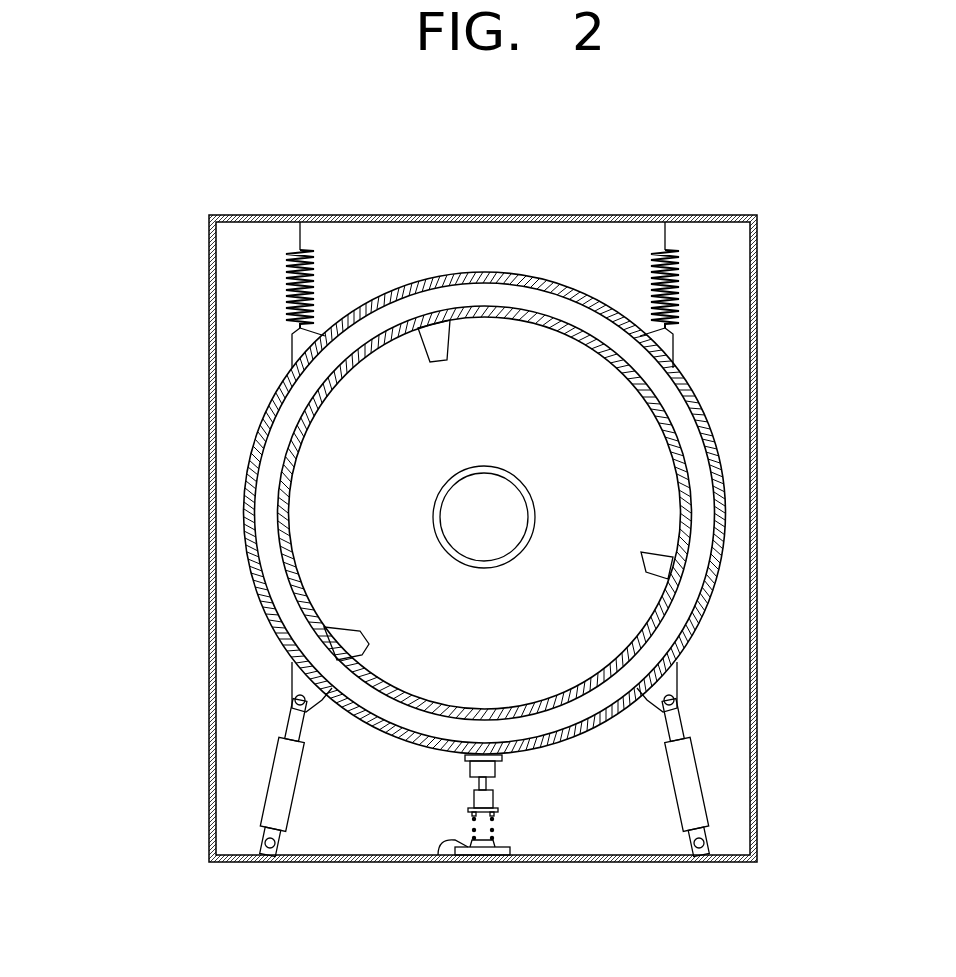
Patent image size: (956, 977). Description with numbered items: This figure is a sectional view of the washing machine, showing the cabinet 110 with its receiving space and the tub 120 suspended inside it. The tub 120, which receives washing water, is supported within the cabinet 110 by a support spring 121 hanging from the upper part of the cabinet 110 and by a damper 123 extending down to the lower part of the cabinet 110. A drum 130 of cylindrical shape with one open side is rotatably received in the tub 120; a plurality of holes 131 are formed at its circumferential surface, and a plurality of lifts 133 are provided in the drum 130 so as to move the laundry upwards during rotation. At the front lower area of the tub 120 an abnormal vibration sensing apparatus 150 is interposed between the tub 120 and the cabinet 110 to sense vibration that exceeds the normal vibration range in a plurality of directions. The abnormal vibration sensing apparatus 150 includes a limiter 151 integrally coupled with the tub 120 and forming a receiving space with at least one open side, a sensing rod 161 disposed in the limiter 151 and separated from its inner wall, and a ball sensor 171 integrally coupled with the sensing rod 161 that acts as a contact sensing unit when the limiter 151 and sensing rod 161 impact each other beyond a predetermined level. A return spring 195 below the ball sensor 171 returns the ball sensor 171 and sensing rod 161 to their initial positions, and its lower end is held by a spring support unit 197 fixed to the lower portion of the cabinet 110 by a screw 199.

The cabinet 110 is at (770, 341).
The tub 120 is at (248, 431).
The support spring 121 is at (288, 290).
The damper 123 is at (282, 777).
The drum 130 is at (373, 513).
The holes 131 is at (283, 540).
The lifts 133 is at (357, 648).
The abnormal vibration sensing apparatus 150 is at (671, 812).
The limiter 151 is at (502, 767).
The sensing rod 161 is at (487, 782).
The ball sensor 171 is at (493, 798).
The return spring 195 is at (492, 826).
The spring support unit 197 is at (513, 858).
The screw 199 is at (439, 858).